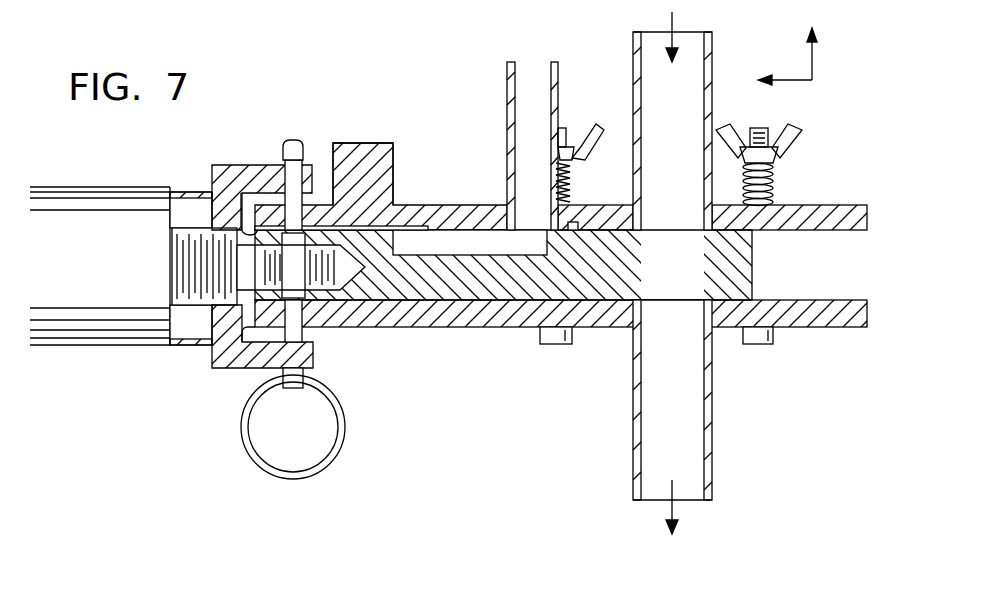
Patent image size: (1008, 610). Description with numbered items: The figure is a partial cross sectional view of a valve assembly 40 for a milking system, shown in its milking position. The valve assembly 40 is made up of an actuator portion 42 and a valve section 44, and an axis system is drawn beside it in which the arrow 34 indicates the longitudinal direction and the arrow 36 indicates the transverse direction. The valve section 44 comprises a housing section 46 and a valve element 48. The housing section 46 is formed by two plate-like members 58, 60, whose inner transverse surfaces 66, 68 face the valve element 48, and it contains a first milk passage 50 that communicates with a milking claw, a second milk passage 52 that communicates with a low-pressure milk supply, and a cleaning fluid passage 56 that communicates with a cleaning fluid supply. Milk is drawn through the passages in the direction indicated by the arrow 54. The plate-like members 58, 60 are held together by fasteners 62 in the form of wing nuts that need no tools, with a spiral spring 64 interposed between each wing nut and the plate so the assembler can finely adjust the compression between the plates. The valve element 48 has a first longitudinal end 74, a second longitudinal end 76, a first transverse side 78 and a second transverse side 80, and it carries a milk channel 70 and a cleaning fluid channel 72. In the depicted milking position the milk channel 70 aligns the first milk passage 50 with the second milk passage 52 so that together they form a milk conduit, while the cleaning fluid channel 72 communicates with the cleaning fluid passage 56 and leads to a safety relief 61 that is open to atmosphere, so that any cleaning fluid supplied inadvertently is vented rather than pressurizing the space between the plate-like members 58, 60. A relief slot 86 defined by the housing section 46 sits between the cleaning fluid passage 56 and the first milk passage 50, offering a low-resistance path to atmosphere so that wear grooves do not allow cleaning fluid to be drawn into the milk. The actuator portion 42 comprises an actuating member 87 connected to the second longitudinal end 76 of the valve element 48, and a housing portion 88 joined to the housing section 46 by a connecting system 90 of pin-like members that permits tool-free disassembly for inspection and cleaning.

The arrow indicating longitudinal direction 34 is at (783, 80).
The arrow indicating transverse direction 36 is at (812, 62).
The valve assembly 40 is at (381, 114).
The actuator portion 42 is at (129, 362).
The valve section 44 is at (476, 356).
The housing section 46 is at (765, 213).
The valve element 48 is at (740, 250).
The first milk passage 50 is at (695, 45).
The second milk passage 52 is at (708, 424).
The arrow indicating milk flow direction 54 is at (669, 22).
The cleaning fluid passage 56 is at (528, 68).
The plate-like member 58 is at (398, 216).
The plate-like member 60 is at (387, 320).
The safety relief 61 is at (243, 190).
The fasteners 62 is at (560, 346).
The spring 64 is at (568, 183).
The inner surface 66 is at (828, 231).
The inner surface 68 is at (833, 299).
The milk channel 70 is at (687, 267).
The cleaning fluid channel 72 is at (458, 240).
The first longitudinal end 74 is at (740, 287).
The second longitudinal end 76 is at (350, 292).
The first transverse side 78 is at (347, 228).
The second transverse side 80 is at (490, 300).
The relief slot 86 is at (577, 230).
The actuating member 87 is at (193, 300).
The housing portion 88 is at (97, 206).
The connecting system 90 is at (238, 437).